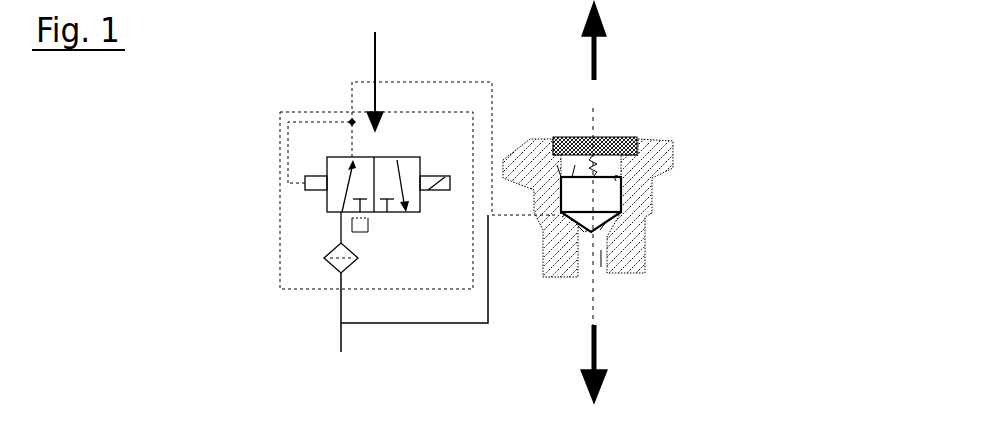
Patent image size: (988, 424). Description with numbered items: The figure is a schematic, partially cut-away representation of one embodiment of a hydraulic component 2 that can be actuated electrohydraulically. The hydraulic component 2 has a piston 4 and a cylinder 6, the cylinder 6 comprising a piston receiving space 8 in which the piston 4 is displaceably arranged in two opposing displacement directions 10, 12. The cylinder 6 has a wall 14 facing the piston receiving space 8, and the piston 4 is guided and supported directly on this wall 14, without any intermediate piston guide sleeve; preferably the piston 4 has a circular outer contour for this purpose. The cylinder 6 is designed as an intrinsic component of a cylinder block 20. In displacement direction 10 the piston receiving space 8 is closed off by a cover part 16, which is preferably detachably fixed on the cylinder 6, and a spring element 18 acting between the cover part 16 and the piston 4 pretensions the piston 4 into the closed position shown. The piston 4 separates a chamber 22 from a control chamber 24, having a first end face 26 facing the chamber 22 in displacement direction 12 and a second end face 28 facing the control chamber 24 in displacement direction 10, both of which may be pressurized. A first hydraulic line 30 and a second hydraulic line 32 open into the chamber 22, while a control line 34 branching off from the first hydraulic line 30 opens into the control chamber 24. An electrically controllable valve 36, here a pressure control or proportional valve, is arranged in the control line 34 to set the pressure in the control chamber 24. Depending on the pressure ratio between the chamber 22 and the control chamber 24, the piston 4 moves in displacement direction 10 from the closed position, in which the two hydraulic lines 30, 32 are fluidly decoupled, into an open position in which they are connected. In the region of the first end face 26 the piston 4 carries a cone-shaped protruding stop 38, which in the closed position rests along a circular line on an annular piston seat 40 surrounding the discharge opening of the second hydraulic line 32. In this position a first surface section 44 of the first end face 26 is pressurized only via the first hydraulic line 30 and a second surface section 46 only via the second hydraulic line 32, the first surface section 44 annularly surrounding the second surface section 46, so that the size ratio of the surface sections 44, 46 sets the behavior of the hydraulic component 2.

The hydraulic component 2 is at (736, 81).
The piston 4 is at (605, 190).
The cylinder 6 is at (651, 215).
The piston receiving space 8 is at (630, 168).
The displacement direction 10 is at (593, 52).
The displacement direction 12 is at (597, 343).
The wall 14 is at (620, 184).
The cover part 16 is at (622, 144).
The spring element 18 is at (596, 162).
The cylinder block 20 is at (647, 172).
The chamber 22 is at (613, 217).
The control chamber 24 is at (572, 177).
The first end face 26 is at (518, 310).
The second end face 28 is at (562, 177).
The first hydraulic line 30 is at (343, 342).
The second hydraulic line 32 is at (601, 267).
The control line 34 is at (340, 312).
The electrically controllable valve 36 is at (375, 71).
The protruding stop 38 is at (600, 230).
The annular piston seat 40 is at (578, 226).
The first surface section 44 is at (562, 217).
The second surface section 46 is at (585, 232).